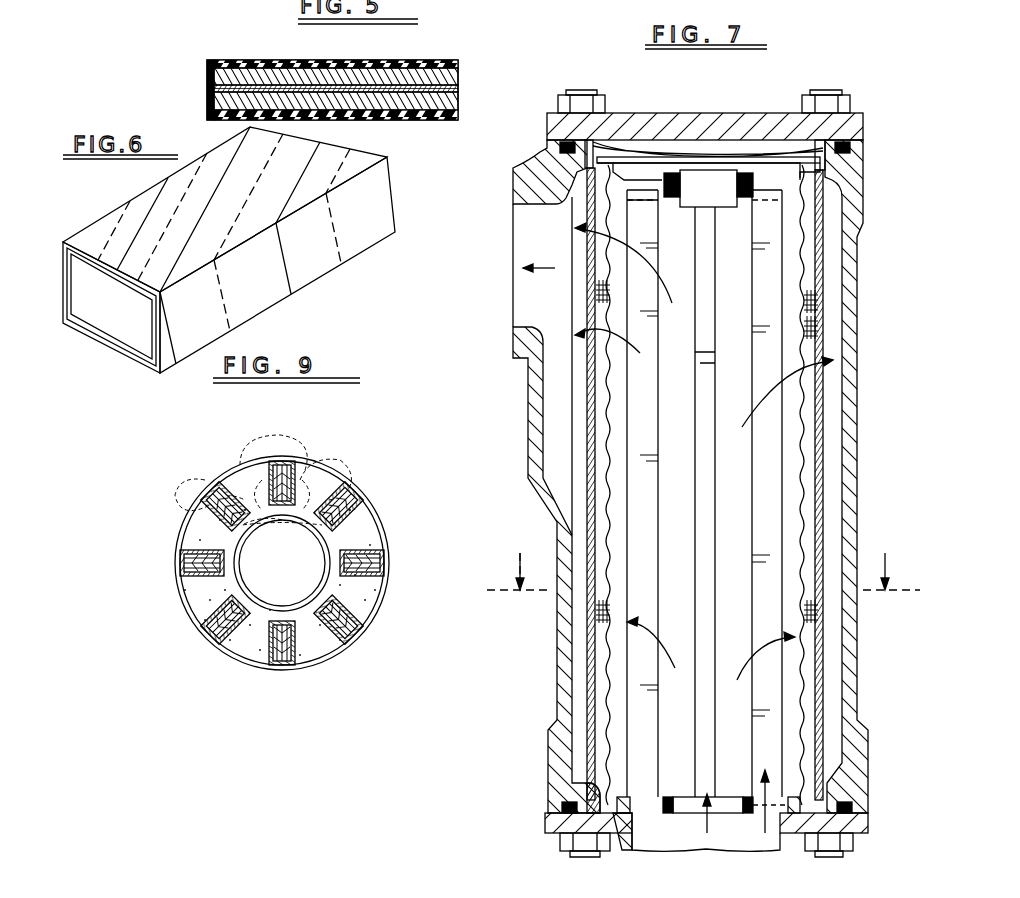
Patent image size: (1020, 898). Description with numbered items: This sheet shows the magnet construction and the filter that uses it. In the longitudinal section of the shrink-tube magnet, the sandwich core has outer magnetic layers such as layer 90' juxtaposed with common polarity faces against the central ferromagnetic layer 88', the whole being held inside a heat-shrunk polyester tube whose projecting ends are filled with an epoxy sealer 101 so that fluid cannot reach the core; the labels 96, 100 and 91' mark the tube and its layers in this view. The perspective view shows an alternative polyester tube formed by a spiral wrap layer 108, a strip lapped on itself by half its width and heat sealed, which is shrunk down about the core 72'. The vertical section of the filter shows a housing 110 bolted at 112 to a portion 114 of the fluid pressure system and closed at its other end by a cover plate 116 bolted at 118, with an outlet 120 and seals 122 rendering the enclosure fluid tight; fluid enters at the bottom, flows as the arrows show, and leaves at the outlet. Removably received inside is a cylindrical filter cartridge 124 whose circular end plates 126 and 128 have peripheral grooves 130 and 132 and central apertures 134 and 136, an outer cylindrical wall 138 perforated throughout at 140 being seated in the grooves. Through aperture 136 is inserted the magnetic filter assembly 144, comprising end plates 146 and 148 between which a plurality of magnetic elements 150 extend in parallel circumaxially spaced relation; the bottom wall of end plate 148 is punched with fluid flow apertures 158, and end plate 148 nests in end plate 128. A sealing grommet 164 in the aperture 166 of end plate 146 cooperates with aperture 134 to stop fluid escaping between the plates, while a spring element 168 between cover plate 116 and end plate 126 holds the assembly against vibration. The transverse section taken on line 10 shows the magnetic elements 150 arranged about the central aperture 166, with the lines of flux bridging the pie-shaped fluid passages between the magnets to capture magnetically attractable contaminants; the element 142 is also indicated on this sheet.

In FIG. 5, the element 96 is at (158, 7).
In FIG. 5, the laminated panel 100 is at (300, 60).
In FIG. 5, the outer skin layer 91' is at (350, 41).
In FIG. 5, the ferromagnetic layer 88' is at (358, 89).
In FIG. 5, the layer 90' is at (338, 110).
In FIG. 5, the epoxy sealer 101 is at (208, 88).
In FIG. 6, the spiral wrap layer 108 is at (115, 222).
In FIG. 6, the core 72' is at (111, 316).
In FIG. 9, the magnetic filter assembly 144 is at (382, 508).
In FIG. 9, the end plate 146 is at (373, 620).
In FIG. 7, the end plate 146 is at (765, 170).
In FIG. 9, the magnetic elements 150 is at (384, 567).
In FIG. 7, the magnetic elements 150 is at (706, 683).
In FIG. 9, the aperture 166 is at (252, 553).
In FIG. 7, the aperture 166 is at (688, 208).
In FIG. 7, the housing 110 is at (858, 268).
In FIG. 7, the bolts 112 is at (567, 843).
In FIG. 7, the portion of the fluid pressure system 114 is at (798, 848).
In FIG. 7, the cover plate 116 is at (678, 113).
In FIG. 7, the bolts 118 is at (598, 103).
In FIG. 7, the outlet 120 is at (535, 328).
In FIG. 7, the seals 122 is at (864, 145).
In FIG. 7, the filter cartridge 124 is at (827, 333).
In FIG. 7, the end plate 126 is at (594, 141).
In FIG. 7, the end plate 128 is at (827, 800).
In FIG. 7, the peripheral groove 130 is at (825, 177).
In FIG. 7, the peripheral groove 132 is at (598, 808).
In FIG. 7, the central aperture 134 is at (585, 167).
In FIG. 7, the central aperture 136 is at (680, 793).
In FIG. 7, the outer cylindrical wall 138 is at (823, 404).
In FIG. 7, the perforations 140 is at (626, 452).
In FIG. 7, the screen 142 is at (607, 413).
In FIG. 7, the end plate 148 is at (656, 817).
In FIG. 7, the fluid flow apertures 158 is at (762, 813).
In FIG. 7, the sealing grommet 164 is at (700, 188).
In FIG. 7, the spring element 168 is at (722, 138).
In FIG. 7, the section line 10- 10 is at (703, 571).